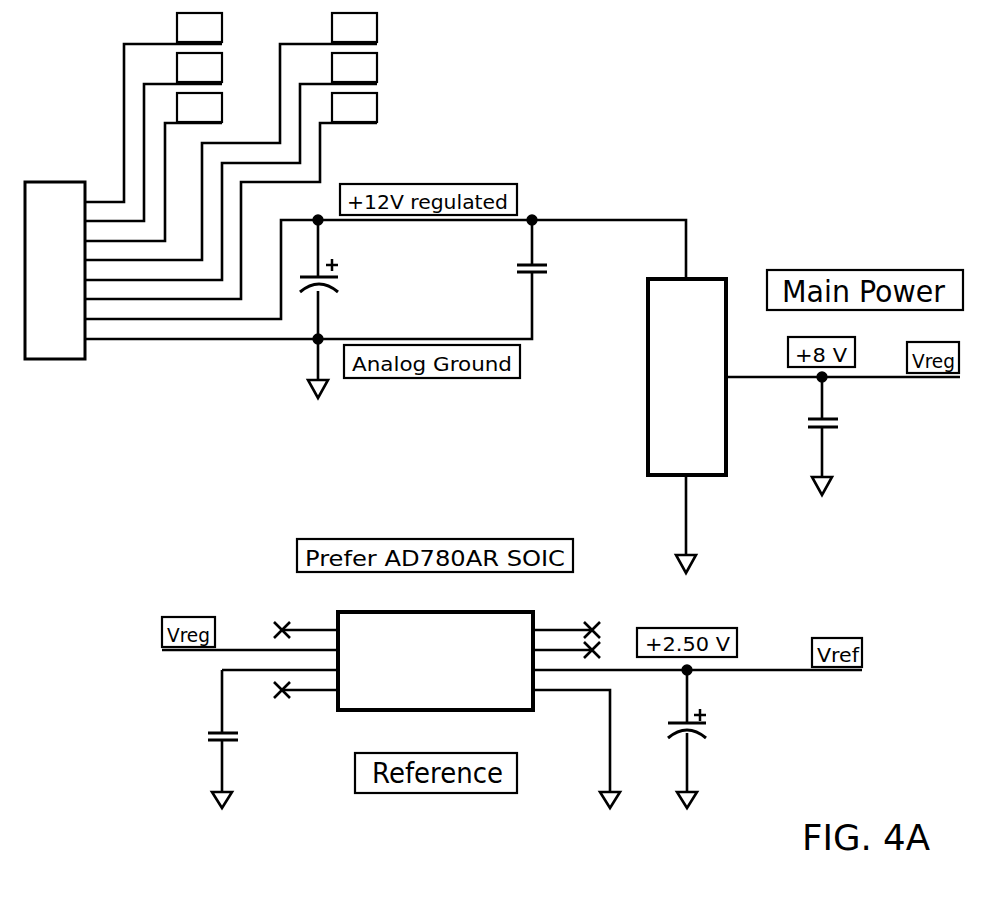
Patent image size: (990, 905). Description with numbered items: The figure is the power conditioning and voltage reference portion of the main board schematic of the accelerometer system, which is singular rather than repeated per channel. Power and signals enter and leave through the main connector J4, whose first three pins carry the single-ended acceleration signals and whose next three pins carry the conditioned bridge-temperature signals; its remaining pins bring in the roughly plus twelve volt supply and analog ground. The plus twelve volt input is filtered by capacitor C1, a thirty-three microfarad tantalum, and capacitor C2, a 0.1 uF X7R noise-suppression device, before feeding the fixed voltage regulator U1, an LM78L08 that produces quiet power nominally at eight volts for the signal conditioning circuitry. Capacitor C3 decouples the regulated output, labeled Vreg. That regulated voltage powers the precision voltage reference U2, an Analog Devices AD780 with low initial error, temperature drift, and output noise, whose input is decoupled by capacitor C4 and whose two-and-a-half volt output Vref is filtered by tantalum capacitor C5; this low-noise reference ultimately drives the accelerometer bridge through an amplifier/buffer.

The connector J4 is at (355, 186).
The capacitor C1 is at (388, 321).
The capacitor C2 is at (556, 277).
The fixed voltage regulator U1 is at (661, 428).
The capacitor C3 is at (827, 449).
The precision voltage reference U2 is at (512, 708).
The capacitor C4 is at (231, 752).
The capacitor C5 is at (767, 752).